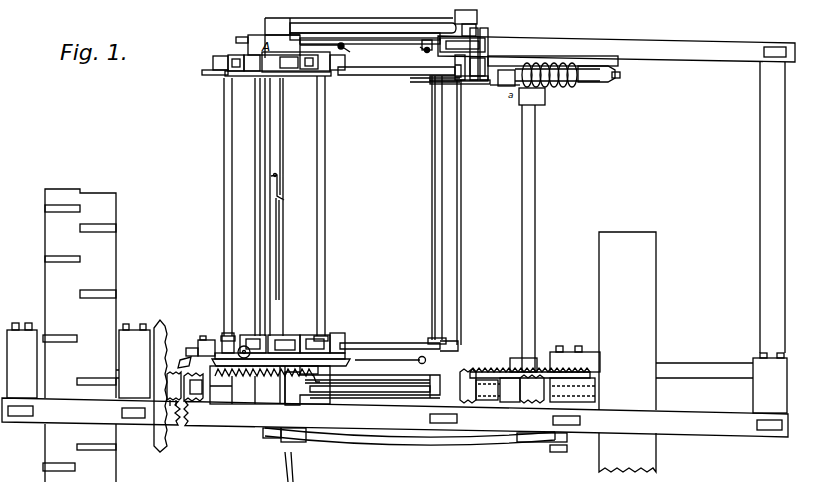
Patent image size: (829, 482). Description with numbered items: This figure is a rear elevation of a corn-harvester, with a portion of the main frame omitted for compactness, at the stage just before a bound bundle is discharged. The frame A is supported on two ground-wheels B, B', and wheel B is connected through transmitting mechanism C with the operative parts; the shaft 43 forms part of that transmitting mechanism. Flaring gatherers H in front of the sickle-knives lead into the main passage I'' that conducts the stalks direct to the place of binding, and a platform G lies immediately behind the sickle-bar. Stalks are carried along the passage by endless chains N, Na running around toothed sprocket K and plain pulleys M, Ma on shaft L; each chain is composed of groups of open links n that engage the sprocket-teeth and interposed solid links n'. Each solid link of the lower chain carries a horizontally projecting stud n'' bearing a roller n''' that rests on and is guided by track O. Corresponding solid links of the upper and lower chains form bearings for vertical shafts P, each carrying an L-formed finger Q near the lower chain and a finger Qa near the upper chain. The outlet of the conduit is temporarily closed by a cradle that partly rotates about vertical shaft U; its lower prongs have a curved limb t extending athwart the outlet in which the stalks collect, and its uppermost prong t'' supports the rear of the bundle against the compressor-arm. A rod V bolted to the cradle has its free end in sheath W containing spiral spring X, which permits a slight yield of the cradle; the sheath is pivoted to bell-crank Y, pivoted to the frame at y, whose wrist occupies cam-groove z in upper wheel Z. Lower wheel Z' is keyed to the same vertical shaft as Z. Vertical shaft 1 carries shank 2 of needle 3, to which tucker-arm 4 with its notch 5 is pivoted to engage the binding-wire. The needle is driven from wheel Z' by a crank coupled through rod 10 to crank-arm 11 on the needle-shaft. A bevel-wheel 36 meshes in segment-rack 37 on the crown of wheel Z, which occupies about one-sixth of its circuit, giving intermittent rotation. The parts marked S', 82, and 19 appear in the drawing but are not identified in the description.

The frame A is at (398, 236).
The ground-wheel B is at (79, 335).
The ground-wheel B' is at (627, 352).
The transmitting mechanism C is at (166, 355).
The track O is at (210, 362).
The vertical shaft P is at (258, 162).
The vertical shaft 1 is at (281, 182).
The shaft L is at (279, 264).
The vertical shaft U is at (440, 128).
The curved limb t is at (399, 208).
The support rod S' is at (534, 230).
The main passage I'' is at (370, 202).
The needle-shank 2 is at (294, 14).
The uppermost prong t'' is at (373, 18).
The tucker-arm 4 is at (375, 40).
The flaring gatherer H is at (365, 53).
The notch 5 is at (420, 42).
The needle 3 is at (470, 2).
The rod V is at (472, 86).
The upper wheel Z is at (553, 63).
The bevel-wheel 36 is at (481, 66).
The spiral spring X is at (565, 88).
The bell-crank Y is at (600, 84).
The pivot y is at (620, 78).
The sheath W is at (507, 90).
The endless chain Na is at (222, 58).
The plain pulley Ma is at (238, 52).
The open link n is at (236, 72).
The solid link n' is at (295, 204).
The finger Qa is at (300, 78).
The endless chain N is at (222, 335).
The stud n'' is at (235, 343).
The roller n''' is at (225, 348).
The plain pulley M is at (294, 340).
The L-formed finger Q is at (338, 360).
The shaft 43 is at (270, 385).
The platform G is at (400, 378).
The slide bar 82 is at (372, 393).
The toothed driving pulley K is at (390, 360).
The cam-groove z is at (370, 189).
The lower wheel Z' is at (535, 362).
The segment-rack 37 is at (505, 404).
The rod 10 is at (408, 438).
The crank-arm 11 is at (284, 440).
The bracket 19 is at (543, 447).